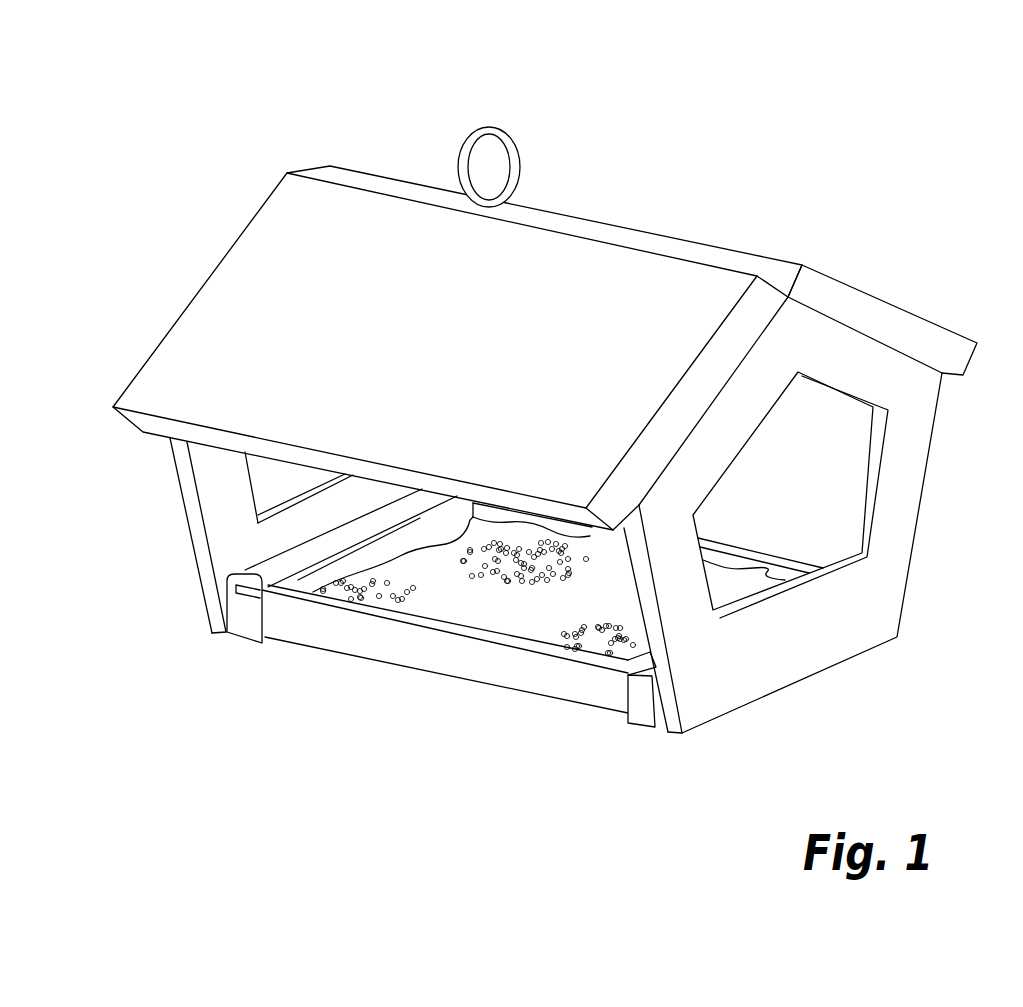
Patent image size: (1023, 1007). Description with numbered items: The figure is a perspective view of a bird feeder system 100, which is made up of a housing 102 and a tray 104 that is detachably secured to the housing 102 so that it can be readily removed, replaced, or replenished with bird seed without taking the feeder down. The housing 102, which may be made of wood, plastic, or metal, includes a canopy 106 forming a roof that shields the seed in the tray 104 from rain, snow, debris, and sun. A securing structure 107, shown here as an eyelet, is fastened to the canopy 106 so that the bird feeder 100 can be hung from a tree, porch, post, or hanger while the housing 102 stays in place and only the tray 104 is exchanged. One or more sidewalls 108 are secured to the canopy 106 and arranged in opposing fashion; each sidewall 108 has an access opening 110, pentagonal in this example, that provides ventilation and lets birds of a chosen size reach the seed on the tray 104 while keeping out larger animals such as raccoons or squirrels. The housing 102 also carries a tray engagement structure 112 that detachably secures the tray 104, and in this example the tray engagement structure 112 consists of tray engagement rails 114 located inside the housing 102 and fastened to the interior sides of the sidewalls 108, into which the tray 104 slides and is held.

The bird feeder system 100 is at (562, 413).
The housing 102 is at (667, 247).
The tray 104 is at (371, 645).
The canopy 106 is at (845, 280).
The securing structure 107 is at (493, 127).
The sidewall 108 is at (897, 503).
The access opening 110 is at (768, 532).
The tray engagement structure 112 is at (304, 695).
The tray engagement rail 114 is at (243, 627).